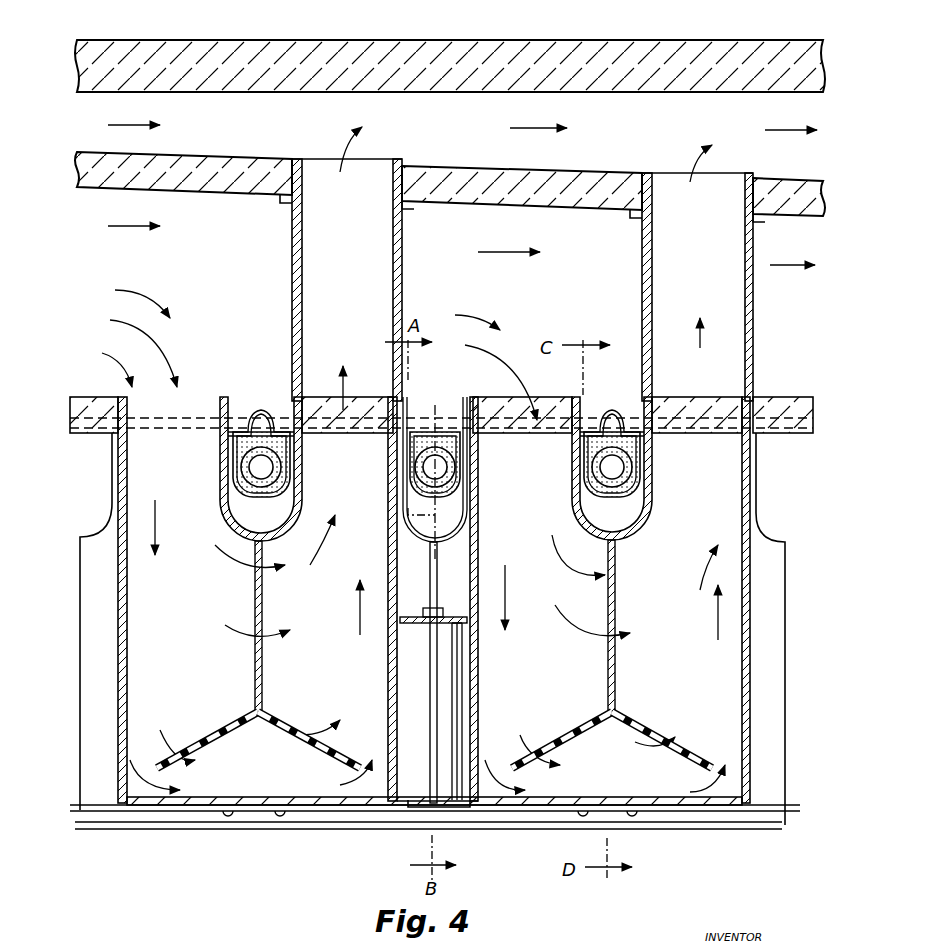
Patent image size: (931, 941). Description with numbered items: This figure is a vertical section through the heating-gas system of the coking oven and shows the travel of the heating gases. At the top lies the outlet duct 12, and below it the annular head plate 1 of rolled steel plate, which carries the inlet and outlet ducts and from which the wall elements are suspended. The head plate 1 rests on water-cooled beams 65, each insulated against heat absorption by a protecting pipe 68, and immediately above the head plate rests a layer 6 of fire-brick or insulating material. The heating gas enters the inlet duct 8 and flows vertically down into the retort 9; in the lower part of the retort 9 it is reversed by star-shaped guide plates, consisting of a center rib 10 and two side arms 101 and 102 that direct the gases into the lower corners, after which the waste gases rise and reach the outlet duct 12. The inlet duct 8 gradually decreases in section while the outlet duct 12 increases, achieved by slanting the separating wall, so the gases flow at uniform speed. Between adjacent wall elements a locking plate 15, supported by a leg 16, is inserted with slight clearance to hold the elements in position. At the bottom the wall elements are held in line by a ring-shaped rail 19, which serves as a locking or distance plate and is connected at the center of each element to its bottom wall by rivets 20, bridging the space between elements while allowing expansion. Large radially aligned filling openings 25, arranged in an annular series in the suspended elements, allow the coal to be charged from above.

The outlet duct 12 is at (453, 118).
The annular head plate 1 is at (130, 226).
The inlet duct 8 is at (459, 272).
The layer of fire-brick or insulating material 6 is at (778, 412).
The retort 9 is at (435, 613).
The filling opening 25 is at (288, 512).
The protecting pipe 68 is at (460, 460).
The water-cooled beam 65 is at (455, 483).
The guide plate center rib 10 is at (263, 583).
The side arm 101 is at (580, 745).
The side arm 102 is at (652, 728).
The locking plate 15 is at (440, 618).
The leg 16 is at (463, 670).
The ring-shaped rail 19 is at (404, 815).
The rivet 20 is at (280, 818).